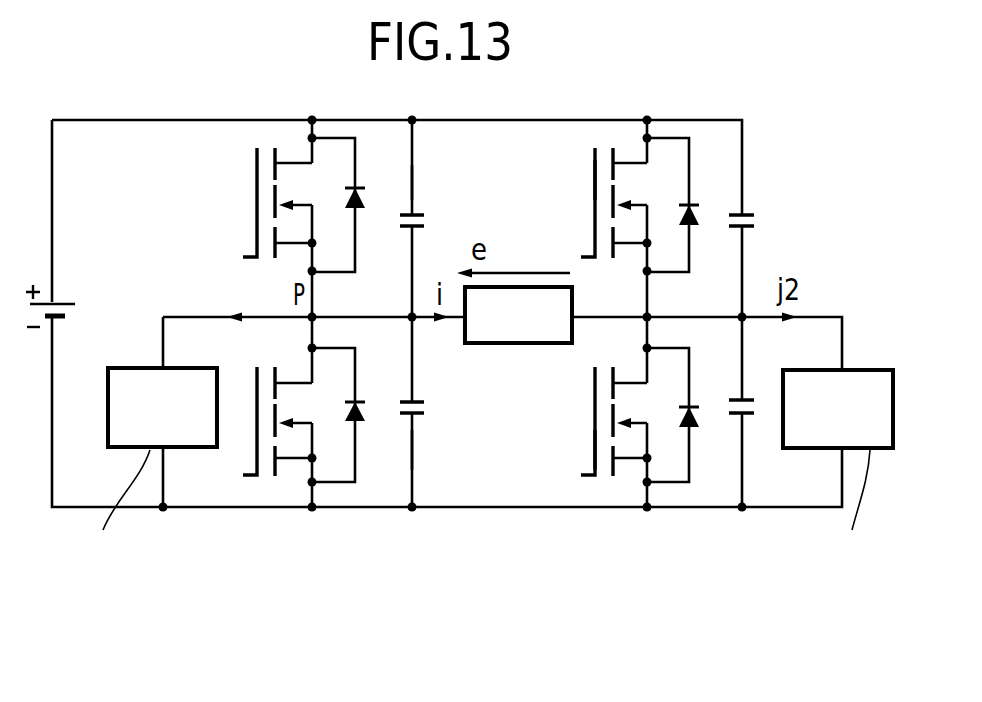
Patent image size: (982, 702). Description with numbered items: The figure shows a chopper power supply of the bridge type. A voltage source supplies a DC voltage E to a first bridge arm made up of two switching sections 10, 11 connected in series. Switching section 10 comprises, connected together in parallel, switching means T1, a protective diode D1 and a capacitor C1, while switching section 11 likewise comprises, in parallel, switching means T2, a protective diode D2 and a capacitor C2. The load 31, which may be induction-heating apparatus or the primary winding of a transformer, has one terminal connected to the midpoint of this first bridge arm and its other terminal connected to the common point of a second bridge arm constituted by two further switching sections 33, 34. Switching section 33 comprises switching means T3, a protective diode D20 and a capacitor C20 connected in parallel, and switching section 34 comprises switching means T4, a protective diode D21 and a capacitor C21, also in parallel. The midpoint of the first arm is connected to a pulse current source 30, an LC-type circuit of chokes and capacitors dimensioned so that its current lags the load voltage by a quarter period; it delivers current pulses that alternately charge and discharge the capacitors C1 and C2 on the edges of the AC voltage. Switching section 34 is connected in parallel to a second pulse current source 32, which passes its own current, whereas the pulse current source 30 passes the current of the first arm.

The DC voltage E is at (67, 302).
The switching means T1 is at (257, 190).
The switching means T2 is at (257, 430).
The switching means T3 is at (594, 220).
The switching means T4 is at (594, 410).
The protective diode D1 is at (359, 187).
The protective diode D2 is at (362, 421).
The protective diode D20 is at (727, 178).
The protective diode D21 is at (699, 420).
The capacitor C1 is at (414, 212).
The capacitor C2 is at (421, 398).
The capacitor C20 is at (748, 211).
The capacitor C21 is at (750, 397).
The switching section 10 is at (424, 173).
The switching section 11 is at (427, 442).
The pulse current source 30 is at (137, 423).
The load 31 is at (500, 327).
The pulse current source 32 is at (843, 382).
The switching section 33 is at (580, 172).
The switching section 34 is at (580, 452).